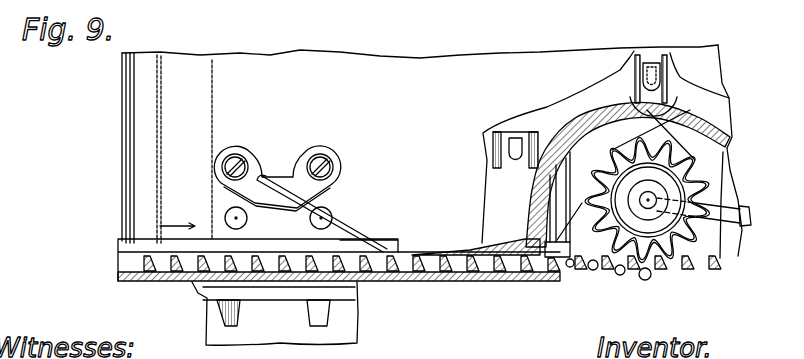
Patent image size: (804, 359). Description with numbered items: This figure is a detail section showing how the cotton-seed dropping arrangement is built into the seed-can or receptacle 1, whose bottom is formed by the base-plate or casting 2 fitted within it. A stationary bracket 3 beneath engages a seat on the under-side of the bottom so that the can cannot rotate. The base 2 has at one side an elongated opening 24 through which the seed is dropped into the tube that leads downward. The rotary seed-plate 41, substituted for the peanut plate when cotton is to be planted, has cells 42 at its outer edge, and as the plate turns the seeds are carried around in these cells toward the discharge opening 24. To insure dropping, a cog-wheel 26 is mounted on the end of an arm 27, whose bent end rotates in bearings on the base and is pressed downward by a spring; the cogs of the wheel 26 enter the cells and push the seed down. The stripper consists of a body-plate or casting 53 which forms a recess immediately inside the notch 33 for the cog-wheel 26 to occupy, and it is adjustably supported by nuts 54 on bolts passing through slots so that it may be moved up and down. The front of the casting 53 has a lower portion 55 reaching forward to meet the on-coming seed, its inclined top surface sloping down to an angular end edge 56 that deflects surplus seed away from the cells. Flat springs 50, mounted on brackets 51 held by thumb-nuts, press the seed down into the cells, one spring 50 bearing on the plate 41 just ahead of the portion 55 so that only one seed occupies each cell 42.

The seed-can or receptacle 1 is at (712, 63).
The bottom or base-plate or casting 2 is at (410, 282).
The stationary bracket 3 is at (283, 328).
The elongated opening 24 is at (595, 271).
The cog-wheel 26 is at (648, 262).
The arm 27 is at (712, 210).
The notch 33 is at (661, 127).
The seed-plate 41 is at (550, 271).
The cells 42 is at (215, 263).
The flat springs 50 is at (347, 230).
The brackets 51 is at (279, 180).
The body-plate or casting 53 is at (535, 194).
The nuts 54 is at (649, 68).
The lower portion 55 is at (495, 244).
The angular end edge 56 is at (411, 254).